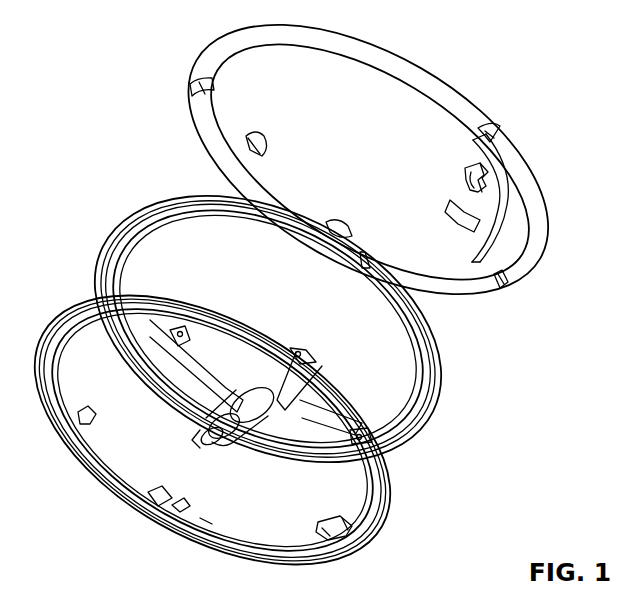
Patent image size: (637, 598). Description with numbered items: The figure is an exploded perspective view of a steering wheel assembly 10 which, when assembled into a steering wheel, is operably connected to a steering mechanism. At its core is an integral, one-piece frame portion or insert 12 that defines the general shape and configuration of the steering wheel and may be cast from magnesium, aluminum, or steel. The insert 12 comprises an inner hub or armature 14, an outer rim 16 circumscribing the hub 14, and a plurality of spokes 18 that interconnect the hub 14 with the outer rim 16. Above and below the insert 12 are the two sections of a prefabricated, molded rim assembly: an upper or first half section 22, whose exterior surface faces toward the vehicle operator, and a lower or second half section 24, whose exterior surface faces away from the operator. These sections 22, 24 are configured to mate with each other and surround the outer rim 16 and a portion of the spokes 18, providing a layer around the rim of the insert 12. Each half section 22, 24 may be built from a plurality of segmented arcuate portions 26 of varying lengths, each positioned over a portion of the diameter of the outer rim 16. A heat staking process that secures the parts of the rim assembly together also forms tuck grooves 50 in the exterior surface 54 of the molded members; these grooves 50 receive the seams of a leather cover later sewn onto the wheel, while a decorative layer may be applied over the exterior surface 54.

The steering wheel assembly 10 is at (517, 77).
The insert 12 is at (280, 329).
The hub 14 is at (187, 412).
The outer rim 16 is at (127, 208).
The spokes 18 is at (140, 320).
The upper half section 22 is at (363, 175).
The lower half section 24 is at (337, 557).
The segmented arcuate portions 26 is at (220, 46).
The tuck grooves 50 is at (198, 80).
The exterior surface 54 is at (485, 163).